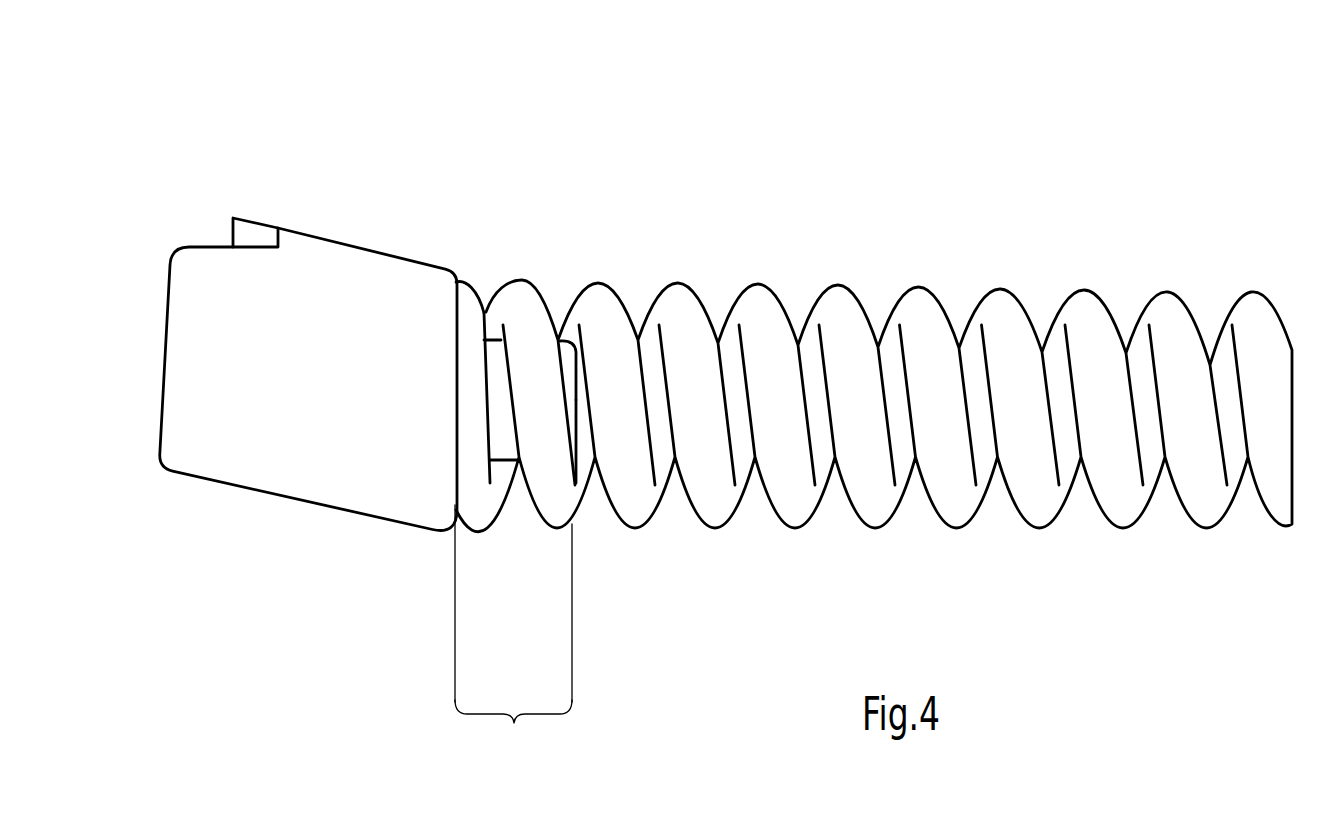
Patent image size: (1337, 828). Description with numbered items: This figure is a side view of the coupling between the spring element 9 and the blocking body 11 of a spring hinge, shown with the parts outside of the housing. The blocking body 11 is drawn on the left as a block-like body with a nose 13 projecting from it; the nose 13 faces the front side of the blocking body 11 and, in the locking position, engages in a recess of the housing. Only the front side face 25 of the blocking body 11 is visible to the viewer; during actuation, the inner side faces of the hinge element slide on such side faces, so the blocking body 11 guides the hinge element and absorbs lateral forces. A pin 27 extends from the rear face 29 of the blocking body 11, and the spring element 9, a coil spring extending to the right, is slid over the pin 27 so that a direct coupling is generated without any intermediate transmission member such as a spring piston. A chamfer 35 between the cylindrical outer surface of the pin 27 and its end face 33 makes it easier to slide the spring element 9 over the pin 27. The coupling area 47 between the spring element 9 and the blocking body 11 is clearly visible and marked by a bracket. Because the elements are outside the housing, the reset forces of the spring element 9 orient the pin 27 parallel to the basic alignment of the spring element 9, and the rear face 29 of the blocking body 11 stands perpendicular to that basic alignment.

The spring element 9 is at (1165, 313).
The blocking body 11 is at (355, 205).
The nose 13 is at (243, 223).
The front side face 25 is at (271, 454).
The pin 27 is at (492, 380).
The rear face 29 is at (469, 429).
The end face 33 is at (580, 403).
The chamfer 35 is at (558, 340).
The coupling area 47 is at (513, 631).